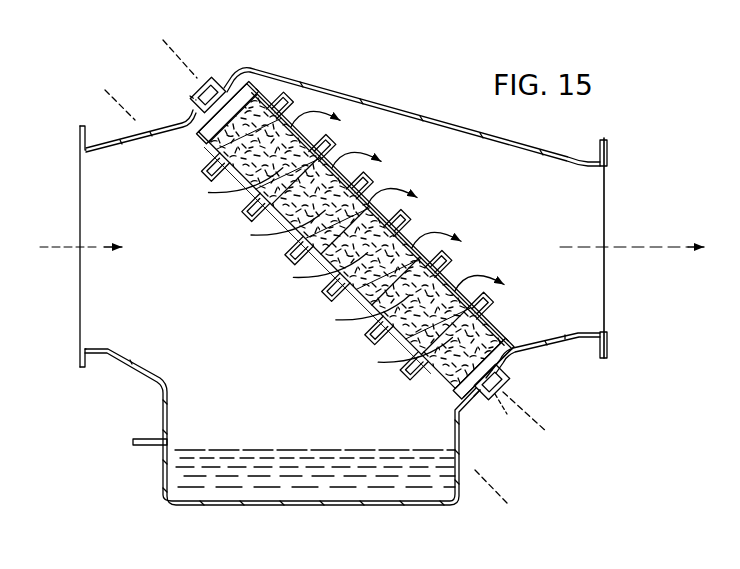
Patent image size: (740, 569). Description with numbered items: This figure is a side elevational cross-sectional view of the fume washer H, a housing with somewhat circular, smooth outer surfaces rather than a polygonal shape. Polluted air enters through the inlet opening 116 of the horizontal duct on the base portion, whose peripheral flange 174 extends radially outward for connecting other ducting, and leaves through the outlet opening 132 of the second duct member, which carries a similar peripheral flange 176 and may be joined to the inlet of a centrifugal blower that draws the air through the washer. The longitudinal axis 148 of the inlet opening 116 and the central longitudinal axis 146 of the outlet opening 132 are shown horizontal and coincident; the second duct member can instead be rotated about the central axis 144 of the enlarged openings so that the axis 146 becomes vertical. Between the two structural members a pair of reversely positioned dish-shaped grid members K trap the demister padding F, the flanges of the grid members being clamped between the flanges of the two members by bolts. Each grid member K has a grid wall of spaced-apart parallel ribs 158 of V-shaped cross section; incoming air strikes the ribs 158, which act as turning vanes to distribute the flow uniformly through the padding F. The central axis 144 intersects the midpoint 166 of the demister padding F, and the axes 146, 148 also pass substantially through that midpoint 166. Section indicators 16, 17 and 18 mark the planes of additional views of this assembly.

The inlet opening 16 is at (190, 96).
The section line 17- 17 is at (163, 40).
The section line 18- 18 is at (120, 74).
The inlet opening 116 is at (80, 200).
The outlet opening 132 is at (608, 205).
The central axis 144 is at (403, 200).
The central longitudinal axis 146 is at (628, 248).
The longitudinal axis 148 is at (48, 250).
The ribs 158 is at (406, 220).
The midpoint 166 is at (312, 250).
The peripheral flange 174 is at (80, 358).
The peripheral flange 176 is at (606, 355).
The fume washer H is at (347, 78).
The demister padding F is at (407, 332).
The grid member K is at (506, 332).